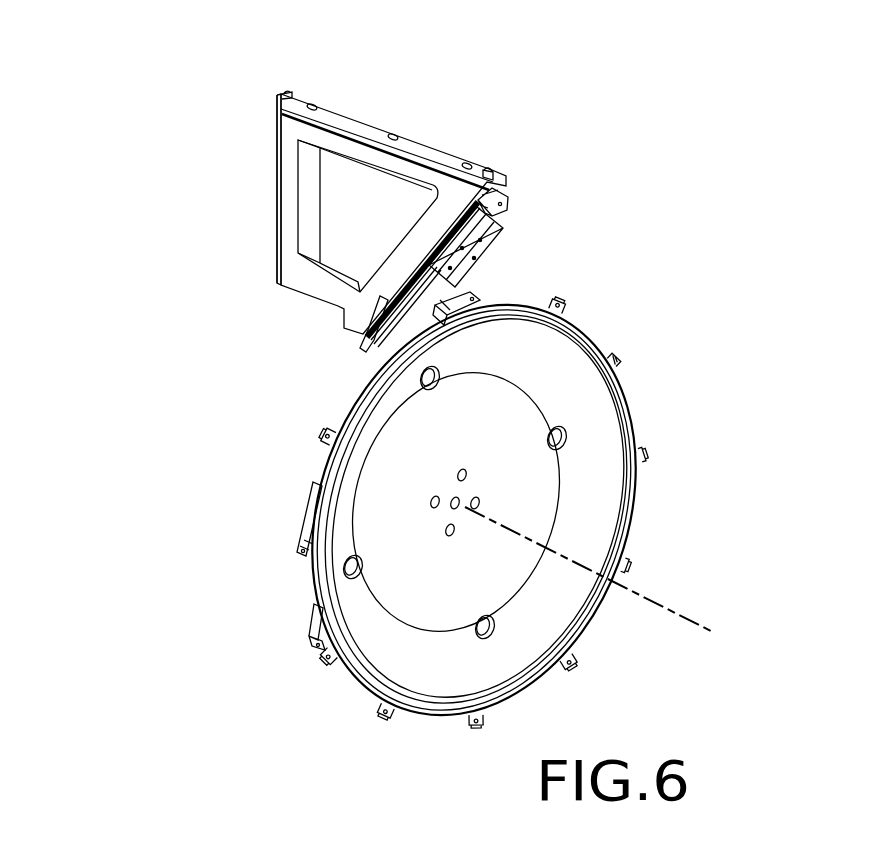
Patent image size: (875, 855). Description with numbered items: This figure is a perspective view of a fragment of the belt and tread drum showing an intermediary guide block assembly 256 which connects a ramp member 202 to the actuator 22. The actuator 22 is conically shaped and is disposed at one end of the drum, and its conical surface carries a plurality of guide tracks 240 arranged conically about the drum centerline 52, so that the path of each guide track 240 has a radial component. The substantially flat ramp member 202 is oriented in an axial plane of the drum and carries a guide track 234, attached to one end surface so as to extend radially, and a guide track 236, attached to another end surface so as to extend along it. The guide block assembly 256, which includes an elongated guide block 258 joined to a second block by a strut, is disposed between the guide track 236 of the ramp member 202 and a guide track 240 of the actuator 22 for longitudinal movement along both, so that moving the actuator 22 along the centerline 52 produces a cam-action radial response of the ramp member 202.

The actuator 22 is at (612, 445).
The longitudinal central axis 52 is at (713, 631).
The ramp member 202 is at (363, 122).
The guide track 234 is at (276, 155).
The guide track 236 is at (507, 201).
The guide track 240 is at (487, 290).
The guide block assembly 256 is at (512, 240).
The guide block 258 is at (430, 322).